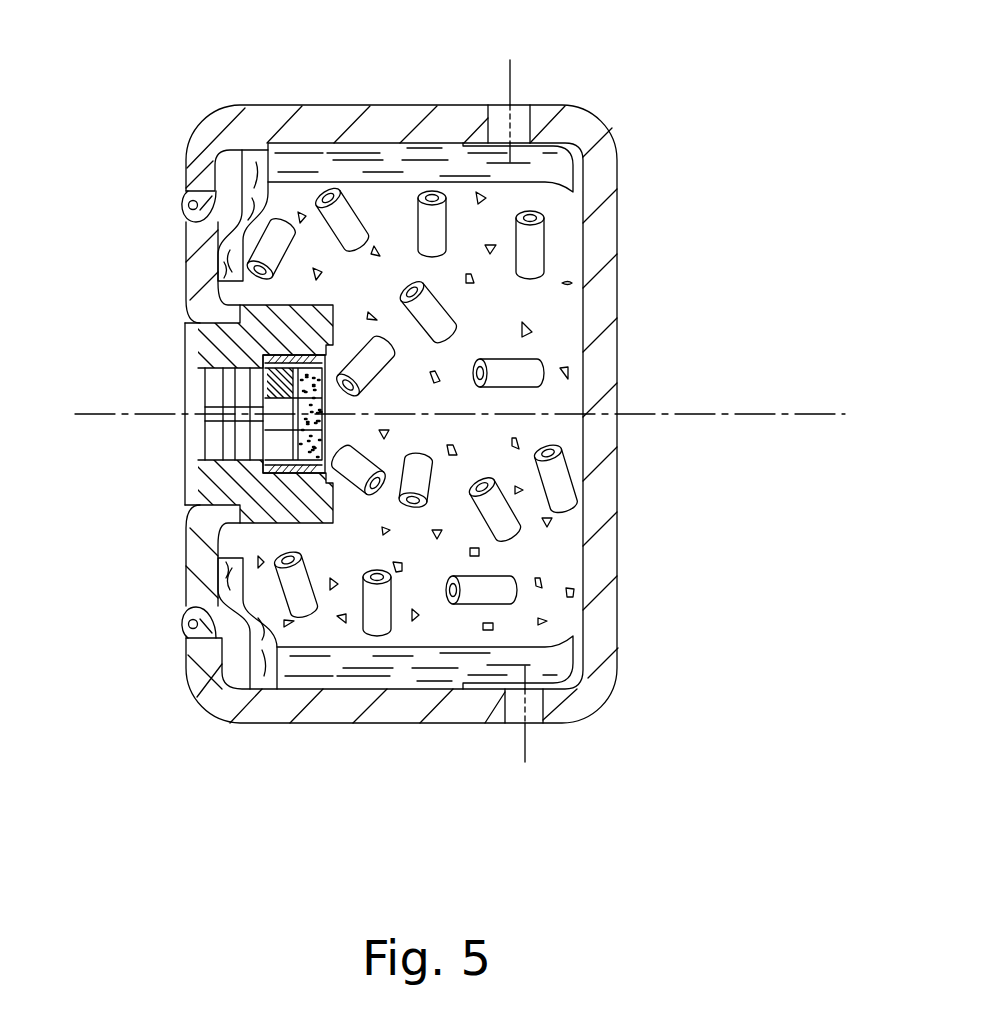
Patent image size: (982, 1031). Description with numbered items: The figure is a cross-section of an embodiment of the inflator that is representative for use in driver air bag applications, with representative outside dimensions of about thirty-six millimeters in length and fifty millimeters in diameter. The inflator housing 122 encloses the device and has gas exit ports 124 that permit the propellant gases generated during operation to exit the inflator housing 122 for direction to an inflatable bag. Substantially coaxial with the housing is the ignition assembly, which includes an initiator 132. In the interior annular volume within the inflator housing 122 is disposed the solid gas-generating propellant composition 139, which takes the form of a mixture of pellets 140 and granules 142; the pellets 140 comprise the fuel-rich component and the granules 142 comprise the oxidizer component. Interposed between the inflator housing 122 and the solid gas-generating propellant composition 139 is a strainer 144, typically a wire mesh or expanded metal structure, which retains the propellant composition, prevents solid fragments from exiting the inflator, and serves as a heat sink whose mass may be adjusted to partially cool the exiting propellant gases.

The inflator housing 122 is at (324, 712).
The gas exit ports 124 is at (521, 108).
The initiator 132 is at (248, 435).
The solid gas-generating propellant composition 139 is at (557, 550).
The pellets 140 is at (557, 484).
The granules 142 is at (530, 331).
The strainer 144 is at (393, 157).